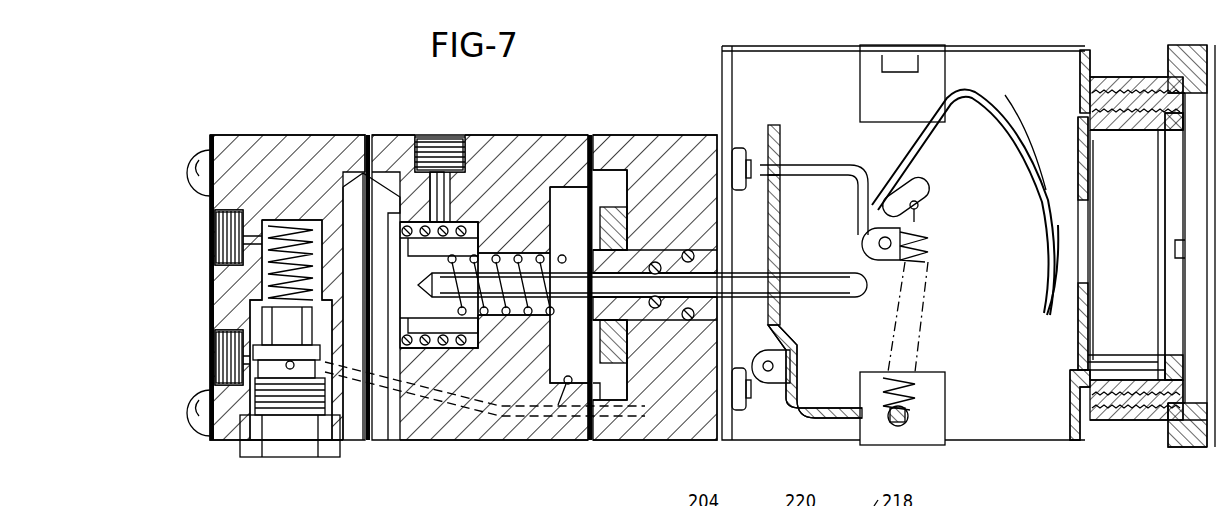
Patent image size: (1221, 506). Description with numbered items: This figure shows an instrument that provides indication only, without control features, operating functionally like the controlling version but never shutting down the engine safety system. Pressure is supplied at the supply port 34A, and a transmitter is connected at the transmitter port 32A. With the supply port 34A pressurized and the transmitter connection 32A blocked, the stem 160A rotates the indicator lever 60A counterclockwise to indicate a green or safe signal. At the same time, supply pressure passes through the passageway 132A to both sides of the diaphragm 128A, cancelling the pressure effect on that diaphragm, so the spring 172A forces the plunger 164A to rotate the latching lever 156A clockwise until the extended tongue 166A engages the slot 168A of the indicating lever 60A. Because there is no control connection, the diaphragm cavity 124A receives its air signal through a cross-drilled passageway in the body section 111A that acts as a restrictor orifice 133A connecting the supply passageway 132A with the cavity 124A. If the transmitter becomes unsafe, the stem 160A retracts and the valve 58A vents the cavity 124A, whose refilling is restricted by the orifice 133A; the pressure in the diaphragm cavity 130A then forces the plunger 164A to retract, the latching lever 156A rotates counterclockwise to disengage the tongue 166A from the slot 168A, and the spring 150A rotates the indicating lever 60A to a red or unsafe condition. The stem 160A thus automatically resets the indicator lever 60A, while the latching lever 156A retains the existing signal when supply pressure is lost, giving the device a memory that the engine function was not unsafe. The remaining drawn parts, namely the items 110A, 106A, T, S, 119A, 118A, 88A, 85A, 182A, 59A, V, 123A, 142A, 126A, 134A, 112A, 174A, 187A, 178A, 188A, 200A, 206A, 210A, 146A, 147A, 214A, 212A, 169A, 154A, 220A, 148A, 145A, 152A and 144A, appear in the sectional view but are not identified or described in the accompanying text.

The valve housing 110A is at (289, 152).
The housing end wall 106A is at (215, 296).
The transmitter port 32A is at (214, 238).
The tank connection T is at (222, 228).
The supply port 34A is at (224, 350).
The supply connection S is at (222, 358).
The passage 119A is at (250, 252).
The spring 118A is at (283, 232).
The relief valve 88A is at (290, 370).
The valve plug 85A is at (318, 375).
The nut 182A is at (298, 452).
The valve 58A is at (390, 227).
The body section 111A is at (508, 150).
The vent plug 59A is at (450, 140).
The vent V is at (437, 140).
The stem 123A is at (440, 198).
The chamber 142A is at (472, 243).
The spring 126A is at (410, 300).
The spring seat 134A is at (440, 338).
The spring 172A is at (495, 310).
The stem 160A is at (805, 292).
The passageway 132A is at (463, 415).
The restrictor orifice 133A is at (578, 418).
The diaphragm cavity 124A is at (567, 197).
The end housing 112A is at (672, 150).
The diaphragm cavity 130A is at (612, 190).
The recess 174A is at (633, 205).
The seal 187A is at (654, 262).
The seal 178A is at (630, 326).
The collar 188A is at (712, 312).
The plunger 164A is at (684, 258).
The diaphragm 128A is at (598, 385).
The frame housing 200A is at (1055, 440).
The housing flange 206A is at (1085, 378).
The end cap 210A is at (1178, 450).
The cylinder 146A is at (1147, 200).
The cylinder wall 147A is at (1088, 245).
The piston 214A is at (1167, 360).
The piston end 212A is at (1083, 362).
The pin 169A is at (777, 143).
The slot 168A is at (778, 195).
The extended tongue 166A is at (805, 167).
The latching lever 156A is at (793, 360).
The tab 154A is at (850, 405).
The mounting block 220A is at (930, 90).
The curved arm 148A is at (1032, 140).
The indicator lever 60A is at (1043, 197).
The contact member 145A is at (1053, 246).
The link 152A is at (923, 202).
The pivot lever 144A is at (897, 278).
The spring 150A is at (938, 259).